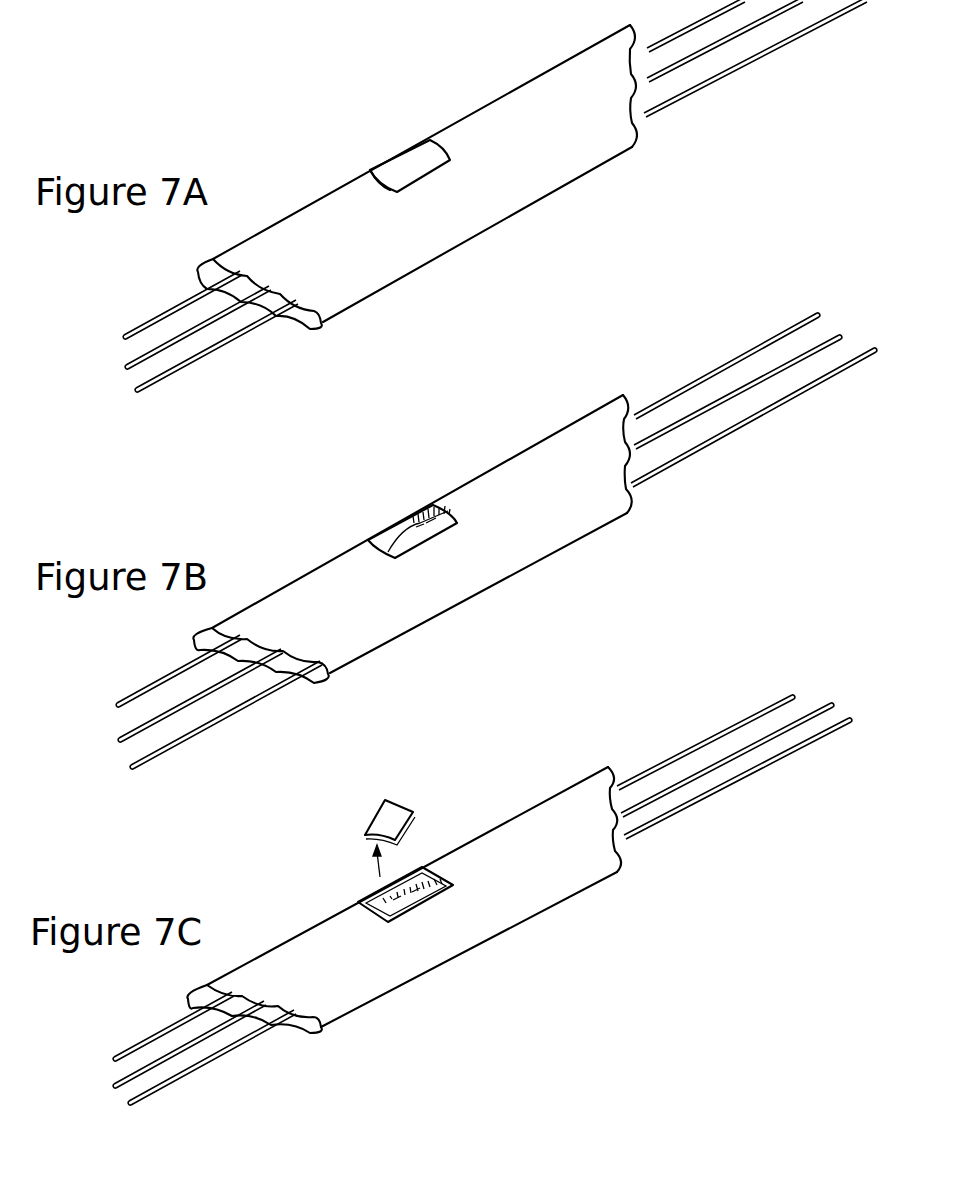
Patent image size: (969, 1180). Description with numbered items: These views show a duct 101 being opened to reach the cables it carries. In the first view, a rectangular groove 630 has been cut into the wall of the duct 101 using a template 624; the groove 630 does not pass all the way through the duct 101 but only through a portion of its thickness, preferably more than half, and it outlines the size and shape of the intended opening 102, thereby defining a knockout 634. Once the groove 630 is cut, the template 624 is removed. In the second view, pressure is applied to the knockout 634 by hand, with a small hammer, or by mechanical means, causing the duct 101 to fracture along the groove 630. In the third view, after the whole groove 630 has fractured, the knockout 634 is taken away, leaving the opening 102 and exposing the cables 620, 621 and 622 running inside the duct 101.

In FIG. 7A, the duct 101 is at (563, 187).
In FIG. 7B, the duct 101 is at (562, 550).
In FIG. 7C, the duct 101 is at (503, 932).
In FIG. 7C, the opening 102 is at (380, 887).
In FIG. 7A, the cable 620 is at (128, 330).
In FIG. 7B, the cable 620 is at (130, 695).
In FIG. 7C, the cable 620 is at (130, 1048).
In FIG. 7A, the cable 621 is at (128, 357).
In FIG. 7B, the cable 621 is at (127, 732).
In FIG. 7C, the cable 621 is at (122, 1067).
In FIG. 7A, the cable 622 is at (137, 380).
In FIG. 7B, the cable 622 is at (132, 757).
In FIG. 7C, the cable 622 is at (132, 1092).
In FIG. 7A, the template 624 is at (410, 158).
In FIG. 7A, the groove 630 is at (370, 170).
In FIG. 7B, the knockout 634 is at (398, 540).
In FIG. 7C, the knockout 634 is at (395, 808).